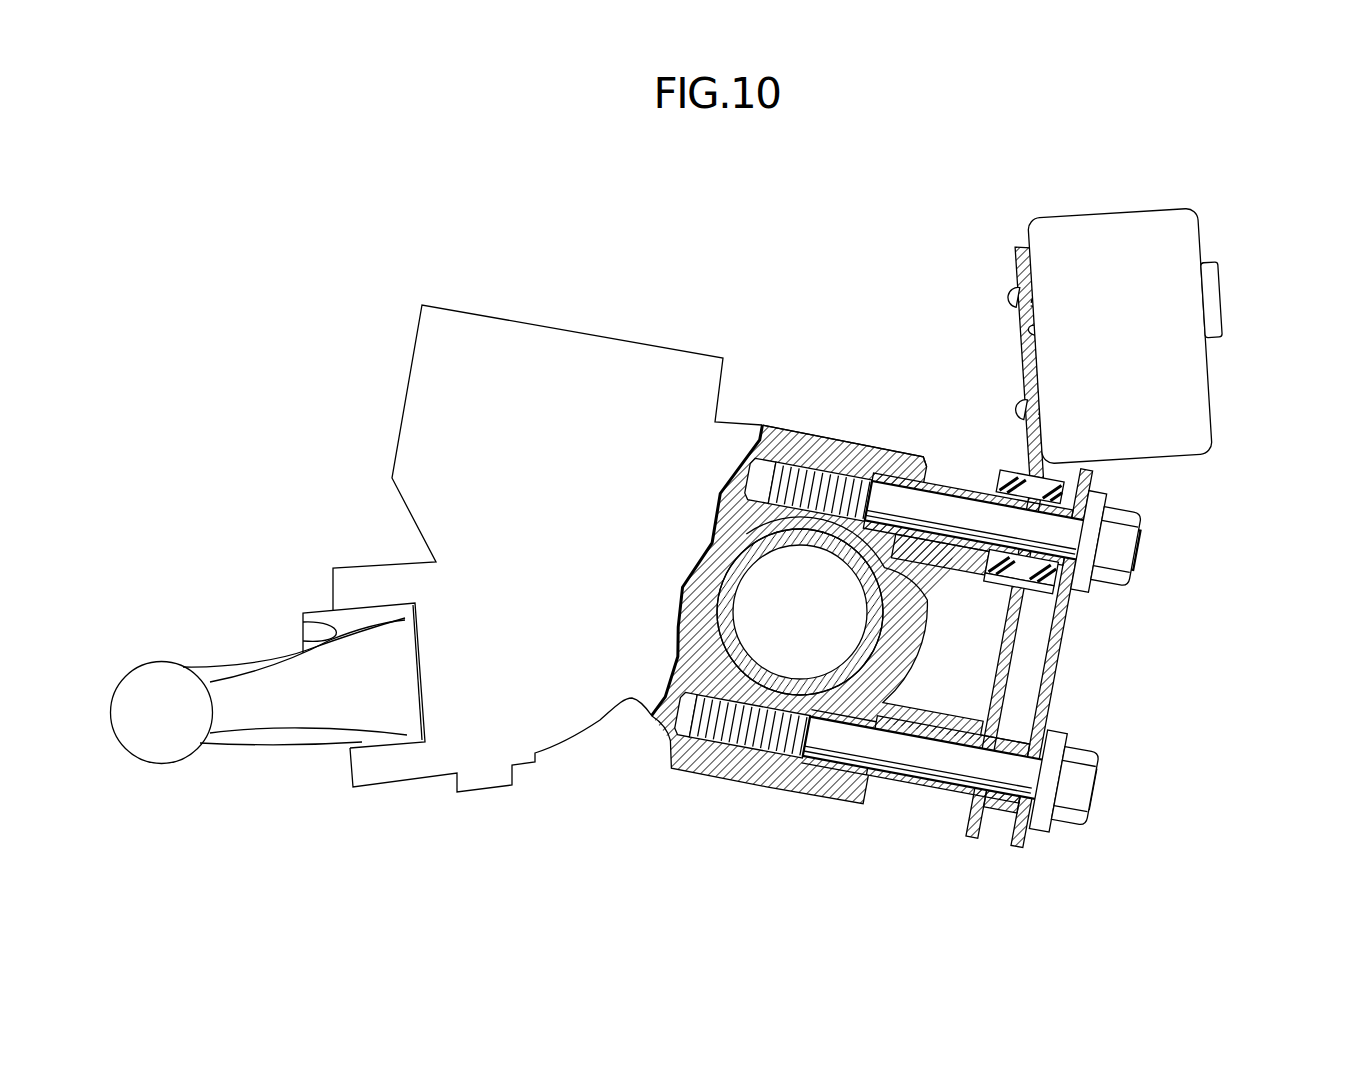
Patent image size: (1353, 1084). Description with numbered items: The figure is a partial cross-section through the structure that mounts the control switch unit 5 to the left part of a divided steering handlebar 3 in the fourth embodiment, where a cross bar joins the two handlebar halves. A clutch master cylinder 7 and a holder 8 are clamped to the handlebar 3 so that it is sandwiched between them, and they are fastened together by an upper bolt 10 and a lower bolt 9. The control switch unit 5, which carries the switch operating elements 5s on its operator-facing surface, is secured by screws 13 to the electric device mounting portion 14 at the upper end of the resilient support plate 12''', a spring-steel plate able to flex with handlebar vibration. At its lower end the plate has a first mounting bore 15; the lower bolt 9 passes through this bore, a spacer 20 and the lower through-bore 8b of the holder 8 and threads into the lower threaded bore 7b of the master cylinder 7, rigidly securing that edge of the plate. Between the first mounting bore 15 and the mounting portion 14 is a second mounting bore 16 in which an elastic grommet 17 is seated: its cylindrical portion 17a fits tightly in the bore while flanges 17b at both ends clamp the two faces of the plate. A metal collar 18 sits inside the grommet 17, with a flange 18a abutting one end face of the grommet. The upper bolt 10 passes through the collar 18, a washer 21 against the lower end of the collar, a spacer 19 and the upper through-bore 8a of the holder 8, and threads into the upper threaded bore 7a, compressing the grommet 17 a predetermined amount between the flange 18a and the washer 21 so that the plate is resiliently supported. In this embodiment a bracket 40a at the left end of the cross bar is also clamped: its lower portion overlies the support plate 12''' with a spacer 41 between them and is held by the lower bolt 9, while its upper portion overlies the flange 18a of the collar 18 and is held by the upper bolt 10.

The steering handlebar 3 is at (722, 618).
The control switch unit 5 is at (1105, 350).
The switch operating elements 5s is at (1214, 316).
The clutch master cylinder 7 is at (549, 552).
The upper threaded bore 7a is at (800, 473).
The lower threaded bore 7b is at (690, 767).
The holder 8 is at (873, 453).
The upper through-bore 8a is at (887, 487).
The lower through-bore 8b is at (840, 753).
The lower bolt 9 is at (1067, 783).
The upper bolt 10 is at (1100, 552).
The resilient support plate 12''' is at (1034, 541).
The screws 13 is at (1008, 297).
The electric device mounting portion 14 is at (1031, 331).
The first mounting bore 15 is at (950, 781).
The second mounting bore 16 is at (995, 586).
The elastic grommet 17 is at (1063, 467).
The cylindrical portion 17a is at (1112, 469).
The flanges 17b is at (1010, 470).
The collar 18 is at (1103, 551).
The flange 18a is at (1125, 512).
The spacer 19 is at (867, 597).
The spacer 20 is at (913, 797).
The washer 21 is at (975, 560).
The bracket 40a is at (1045, 688).
The spacer 41 is at (993, 813).